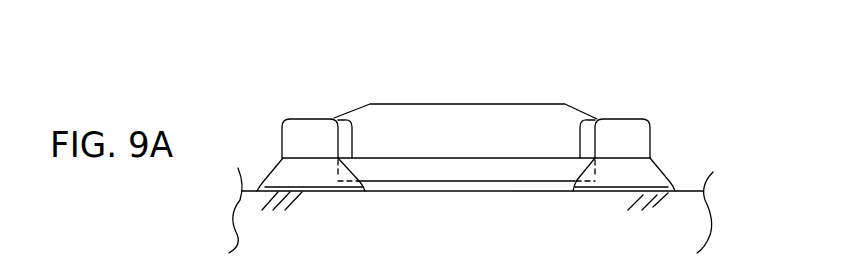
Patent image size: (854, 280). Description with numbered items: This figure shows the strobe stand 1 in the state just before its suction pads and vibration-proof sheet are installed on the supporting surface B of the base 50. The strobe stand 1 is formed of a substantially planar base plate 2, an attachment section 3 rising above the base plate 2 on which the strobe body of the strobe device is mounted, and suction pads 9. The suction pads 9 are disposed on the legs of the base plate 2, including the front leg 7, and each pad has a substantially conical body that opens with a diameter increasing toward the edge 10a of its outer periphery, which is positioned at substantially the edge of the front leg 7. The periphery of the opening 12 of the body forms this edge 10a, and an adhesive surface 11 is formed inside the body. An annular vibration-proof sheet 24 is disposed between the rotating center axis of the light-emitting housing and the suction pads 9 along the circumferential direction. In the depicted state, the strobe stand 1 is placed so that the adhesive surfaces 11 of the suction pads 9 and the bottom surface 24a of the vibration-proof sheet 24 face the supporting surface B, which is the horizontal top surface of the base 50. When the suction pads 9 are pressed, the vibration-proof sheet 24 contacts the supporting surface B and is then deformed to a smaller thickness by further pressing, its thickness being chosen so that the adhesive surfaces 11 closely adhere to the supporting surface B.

The strobe stand 1 is at (211, 51).
The base plate 2 is at (432, 160).
The attachment section 3 is at (457, 128).
The front leg 7 is at (308, 127).
The suction pad 9 is at (284, 160).
The edge 10a is at (361, 188).
The adhesive surface 11 is at (302, 176).
The opening 12 is at (312, 188).
The vibration-proof sheet 24 is at (475, 181).
The bottom surface 24a is at (507, 182).
The base 50 is at (693, 222).
The supporting surface B is at (687, 190).